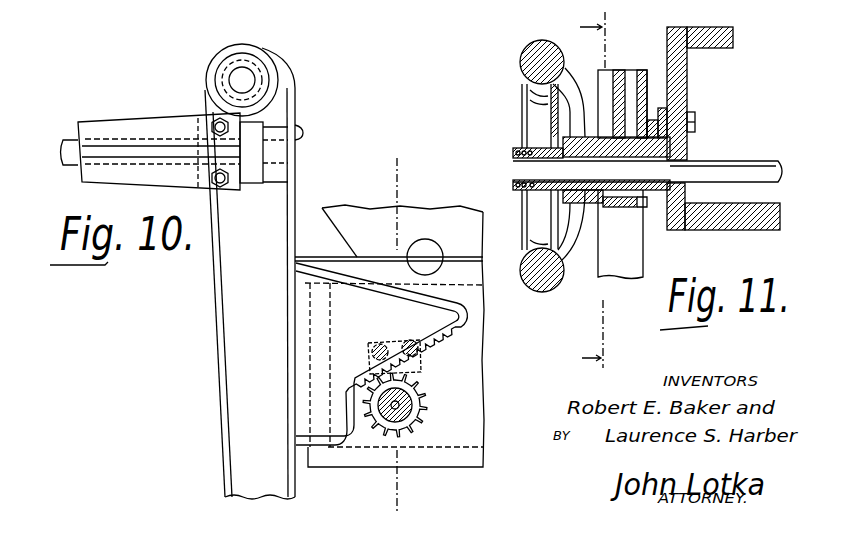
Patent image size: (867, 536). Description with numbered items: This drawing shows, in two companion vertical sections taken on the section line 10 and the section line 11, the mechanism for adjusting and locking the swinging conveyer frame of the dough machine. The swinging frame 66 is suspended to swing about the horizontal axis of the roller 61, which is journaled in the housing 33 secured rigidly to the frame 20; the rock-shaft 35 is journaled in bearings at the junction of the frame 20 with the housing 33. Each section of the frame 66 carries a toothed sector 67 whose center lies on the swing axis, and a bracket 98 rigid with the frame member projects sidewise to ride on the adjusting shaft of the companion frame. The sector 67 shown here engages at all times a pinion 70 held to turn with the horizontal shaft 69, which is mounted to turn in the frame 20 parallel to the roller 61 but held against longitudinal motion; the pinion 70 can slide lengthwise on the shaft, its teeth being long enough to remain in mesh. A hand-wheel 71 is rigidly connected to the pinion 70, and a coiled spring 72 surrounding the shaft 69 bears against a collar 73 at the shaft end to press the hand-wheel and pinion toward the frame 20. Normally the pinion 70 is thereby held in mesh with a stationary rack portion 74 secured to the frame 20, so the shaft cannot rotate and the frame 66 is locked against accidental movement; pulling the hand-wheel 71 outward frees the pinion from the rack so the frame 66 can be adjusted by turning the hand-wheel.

In FIG. 11, the section line 10— 10 is at (592, 188).
In FIG. 10, the section line 11— 11 is at (409, 333).
In FIG. 10, the frame 20 is at (473, 412).
In FIG. 11, the frame 20 is at (682, 73).
In FIG. 10, the housing 33 is at (359, 209).
In FIG. 10, the rock-shaft 35 is at (432, 250).
In FIG. 10, the roller 61 is at (243, 82).
In FIG. 10, the swinging frame 66 is at (288, 233).
In FIG. 11, the swinging frame 66 is at (642, 72).
In FIG. 10, the toothed sector 67 is at (438, 352).
In FIG. 11, the toothed sector 67 is at (628, 207).
In FIG. 10, the shaft 69 is at (401, 412).
In FIG. 11, the shaft 69 is at (725, 167).
In FIG. 10, the pinion 70 is at (418, 395).
In FIG. 11, the pinion 70 is at (650, 204).
In FIG. 11, the hand-wheel 71 is at (532, 90).
In FIG. 11, the coiled spring 72 is at (537, 184).
In FIG. 11, the collar 73 is at (513, 153).
In FIG. 10, the stationary rack portion 74 is at (372, 354).
In FIG. 11, the stationary rack portion 74 is at (687, 138).
In FIG. 10, the bracket 98 is at (150, 114).